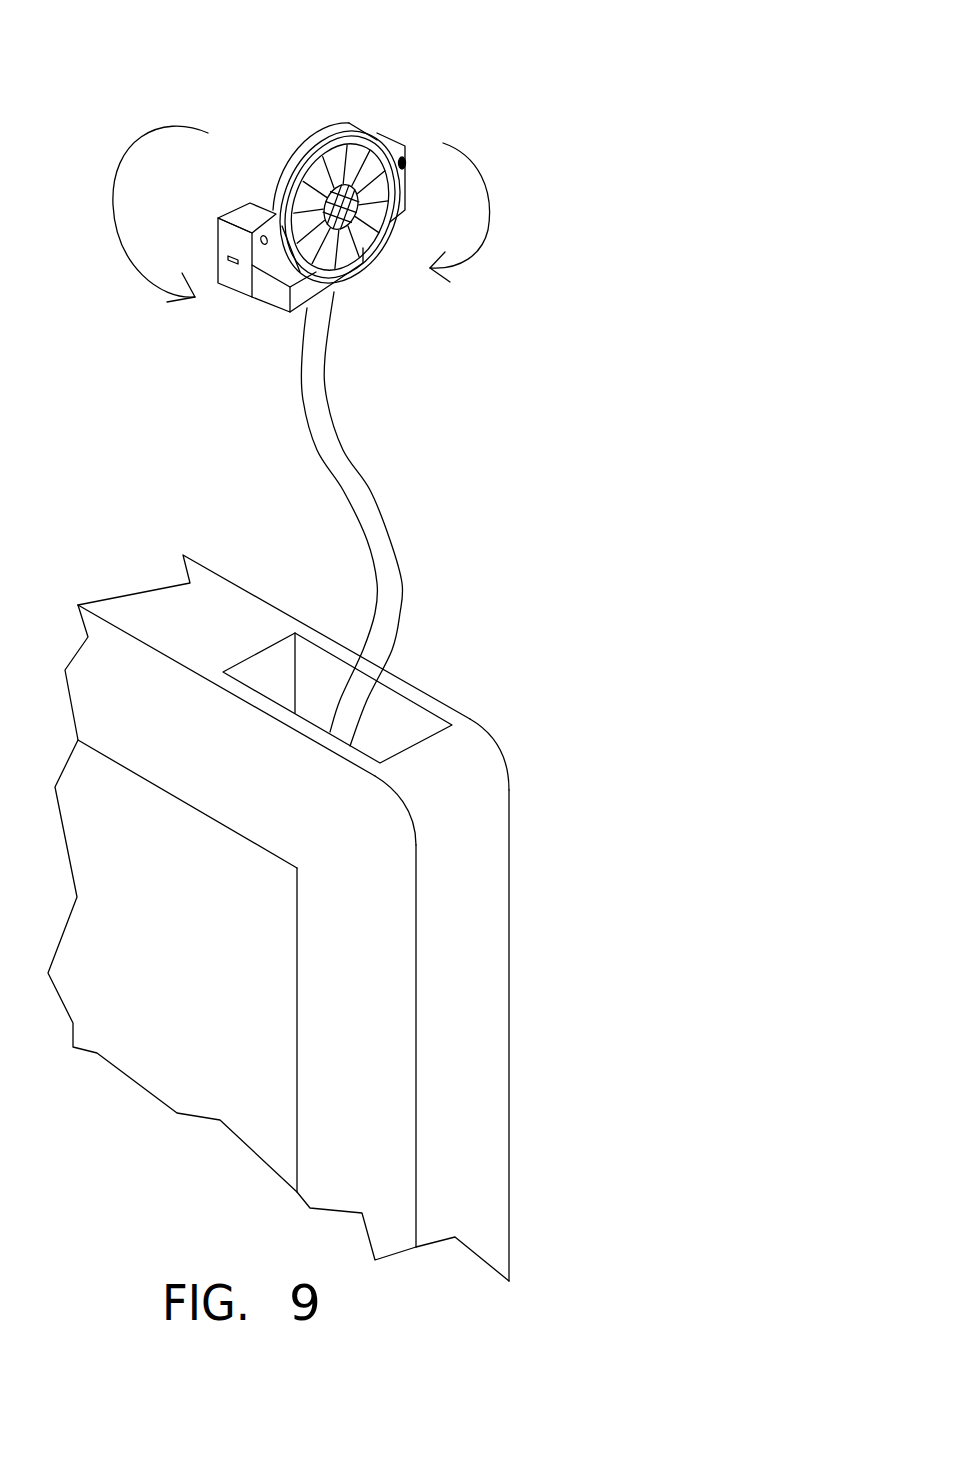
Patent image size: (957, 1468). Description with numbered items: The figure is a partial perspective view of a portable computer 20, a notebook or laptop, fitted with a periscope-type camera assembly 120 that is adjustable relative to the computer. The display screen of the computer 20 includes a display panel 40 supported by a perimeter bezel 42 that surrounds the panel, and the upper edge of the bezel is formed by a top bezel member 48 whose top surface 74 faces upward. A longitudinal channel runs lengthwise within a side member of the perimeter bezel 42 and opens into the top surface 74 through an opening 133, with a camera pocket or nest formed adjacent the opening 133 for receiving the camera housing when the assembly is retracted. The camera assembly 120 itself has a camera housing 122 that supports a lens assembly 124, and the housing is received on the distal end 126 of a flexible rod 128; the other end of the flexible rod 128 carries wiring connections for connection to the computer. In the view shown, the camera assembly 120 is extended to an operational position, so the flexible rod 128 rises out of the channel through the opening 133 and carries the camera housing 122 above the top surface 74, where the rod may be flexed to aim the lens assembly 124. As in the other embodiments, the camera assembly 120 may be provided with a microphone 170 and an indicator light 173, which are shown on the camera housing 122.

The portable computer 20 is at (196, 1150).
The display panel 40 is at (214, 957).
The perimeter bezel 42 is at (470, 1085).
The top bezel member 48 is at (205, 753).
The top surface 74 is at (150, 616).
The camera assembly 120 is at (336, 90).
The camera housing 122 is at (228, 242).
The lens assembly 124 is at (353, 227).
The distal end 126 is at (340, 297).
The flexible rod 128 is at (308, 433).
The opening 133 is at (398, 718).
The microphone 170 is at (405, 156).
The indicator light 173 is at (262, 234).